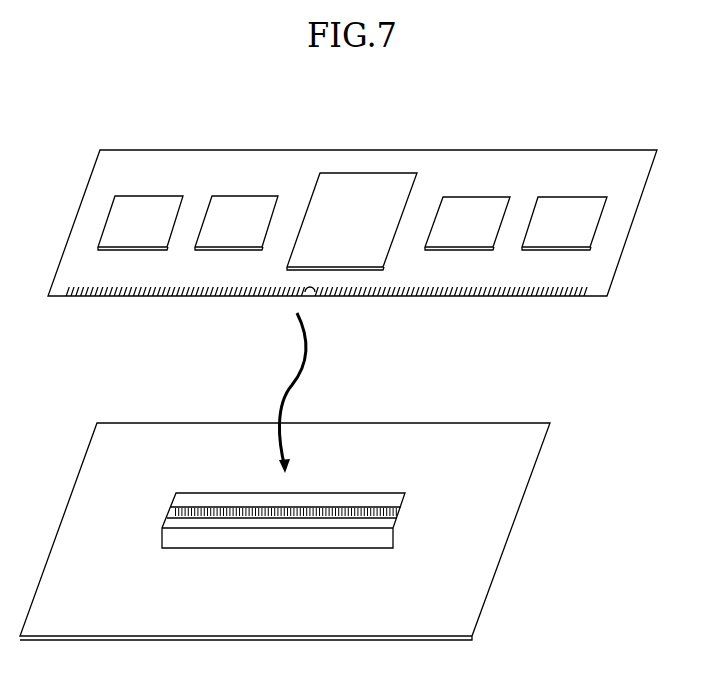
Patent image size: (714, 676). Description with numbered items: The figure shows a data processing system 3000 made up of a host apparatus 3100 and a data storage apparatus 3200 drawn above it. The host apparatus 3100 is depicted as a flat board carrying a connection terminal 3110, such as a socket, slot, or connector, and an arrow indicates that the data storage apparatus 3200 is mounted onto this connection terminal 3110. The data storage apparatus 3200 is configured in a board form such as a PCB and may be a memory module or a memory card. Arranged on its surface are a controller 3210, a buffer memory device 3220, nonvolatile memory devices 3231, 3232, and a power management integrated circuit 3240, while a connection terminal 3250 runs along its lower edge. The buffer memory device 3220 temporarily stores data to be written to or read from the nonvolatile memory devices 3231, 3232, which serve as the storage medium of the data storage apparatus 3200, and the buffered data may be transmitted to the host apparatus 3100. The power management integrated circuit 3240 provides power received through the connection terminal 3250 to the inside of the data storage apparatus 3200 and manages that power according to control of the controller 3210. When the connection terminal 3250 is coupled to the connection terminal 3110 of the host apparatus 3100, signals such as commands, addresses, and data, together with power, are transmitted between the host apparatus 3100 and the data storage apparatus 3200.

The data processing system 3000 is at (122, 116).
The data storage apparatus 3200 is at (352, 244).
The controller 3210 is at (352, 221).
The buffer memory device 3220 is at (236, 223).
The power management integrated circuit 3240 is at (140, 223).
The nonvolatile memory device 3231 is at (467, 223).
The nonvolatile memory device 3232 is at (564, 223).
The connection terminal 3250 is at (83, 297).
The host apparatus 3100 is at (285, 531).
The connection terminal 3110 is at (407, 499).